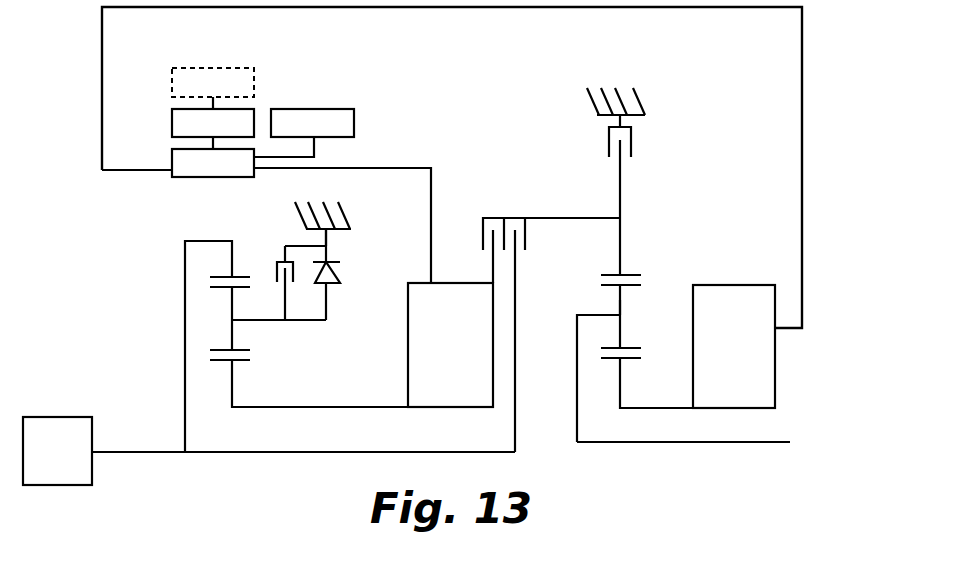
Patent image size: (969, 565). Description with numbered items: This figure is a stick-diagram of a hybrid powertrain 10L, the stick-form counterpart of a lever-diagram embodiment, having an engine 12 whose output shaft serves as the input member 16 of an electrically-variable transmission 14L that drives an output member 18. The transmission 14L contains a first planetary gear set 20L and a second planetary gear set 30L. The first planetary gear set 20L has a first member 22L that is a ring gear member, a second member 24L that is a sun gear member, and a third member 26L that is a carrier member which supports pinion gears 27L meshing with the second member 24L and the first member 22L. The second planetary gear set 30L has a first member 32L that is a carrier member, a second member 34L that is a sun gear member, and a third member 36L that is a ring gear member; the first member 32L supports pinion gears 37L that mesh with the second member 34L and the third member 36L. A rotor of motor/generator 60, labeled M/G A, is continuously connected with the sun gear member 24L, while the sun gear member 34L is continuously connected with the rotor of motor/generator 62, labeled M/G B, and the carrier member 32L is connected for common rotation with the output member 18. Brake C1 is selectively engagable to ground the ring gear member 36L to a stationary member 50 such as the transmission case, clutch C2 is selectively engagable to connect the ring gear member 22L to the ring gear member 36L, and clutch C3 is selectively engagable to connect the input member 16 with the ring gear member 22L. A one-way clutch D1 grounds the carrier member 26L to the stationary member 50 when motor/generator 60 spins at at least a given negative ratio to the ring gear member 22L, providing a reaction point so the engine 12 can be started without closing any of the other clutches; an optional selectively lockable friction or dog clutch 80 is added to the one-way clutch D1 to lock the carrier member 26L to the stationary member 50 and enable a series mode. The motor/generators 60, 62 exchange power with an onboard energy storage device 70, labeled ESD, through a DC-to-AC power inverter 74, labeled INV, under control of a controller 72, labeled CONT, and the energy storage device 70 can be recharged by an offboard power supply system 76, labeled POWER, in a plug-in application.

The powertrain 10L is at (819, 140).
The offboard power supply system 76 is at (212, 68).
The onboard energy storage device 70 is at (172, 125).
The DC-to-AC power inverter 74 is at (172, 165).
The controller 72 is at (313, 109).
The stationary member 50 is at (640, 97).
The brake C1 is at (631, 166).
The clutch C2 is at (533, 247).
The clutch C3 is at (471, 245).
The motor/generator 60 is at (408, 385).
The motor/generator 62 is at (775, 368).
The planetary gear set 30L is at (643, 334).
The third member 36L is at (630, 275).
The first member 32L is at (585, 315).
The pinion gears 37L is at (620, 300).
The second member 34L is at (632, 358).
The transmission 14L is at (215, 342).
The planetary gear set 20L is at (212, 391).
The first member 22L is at (220, 277).
The second member 24L is at (220, 360).
The pinion gears 27L is at (232, 331).
The third member 26L is at (300, 320).
The selectively lockable friction or dog clutch 80 is at (267, 257).
The one-way clutch D1 is at (351, 272).
The engine 12 is at (57, 451).
The input member 16 is at (127, 452).
The output member 18 is at (623, 442).